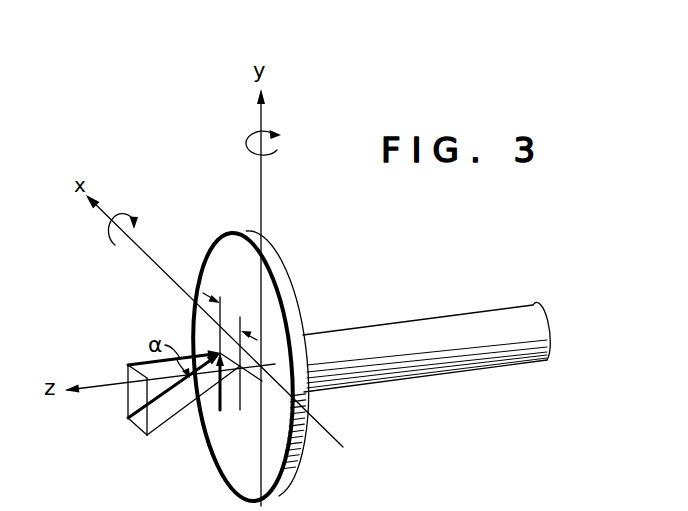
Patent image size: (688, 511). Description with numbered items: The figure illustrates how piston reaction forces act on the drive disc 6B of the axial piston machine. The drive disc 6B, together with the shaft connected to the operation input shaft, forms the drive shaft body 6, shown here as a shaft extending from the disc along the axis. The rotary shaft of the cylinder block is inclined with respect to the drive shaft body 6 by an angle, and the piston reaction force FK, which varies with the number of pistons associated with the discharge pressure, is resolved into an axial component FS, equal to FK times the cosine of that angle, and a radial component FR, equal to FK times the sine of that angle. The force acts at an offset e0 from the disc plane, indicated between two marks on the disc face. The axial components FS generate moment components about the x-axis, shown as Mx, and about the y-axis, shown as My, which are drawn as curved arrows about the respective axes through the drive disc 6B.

The drive shaft body 6 is at (491, 314).
The drive disc 6B is at (246, 343).
The axial component of piston reaction force load FS is at (140, 361).
The piston reaction force FK is at (134, 404).
The radial component of piston reaction force load FR is at (211, 405).
The eccentricity e0 is at (231, 318).
The moment component about the x-axis Mx is at (102, 242).
The moment component about the y-axis My is at (282, 138).